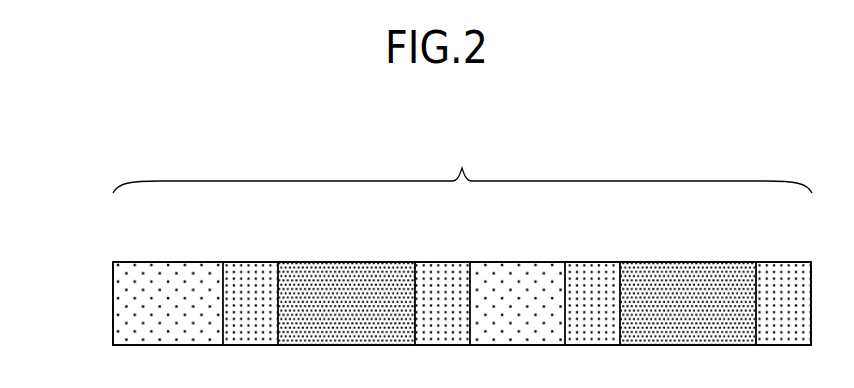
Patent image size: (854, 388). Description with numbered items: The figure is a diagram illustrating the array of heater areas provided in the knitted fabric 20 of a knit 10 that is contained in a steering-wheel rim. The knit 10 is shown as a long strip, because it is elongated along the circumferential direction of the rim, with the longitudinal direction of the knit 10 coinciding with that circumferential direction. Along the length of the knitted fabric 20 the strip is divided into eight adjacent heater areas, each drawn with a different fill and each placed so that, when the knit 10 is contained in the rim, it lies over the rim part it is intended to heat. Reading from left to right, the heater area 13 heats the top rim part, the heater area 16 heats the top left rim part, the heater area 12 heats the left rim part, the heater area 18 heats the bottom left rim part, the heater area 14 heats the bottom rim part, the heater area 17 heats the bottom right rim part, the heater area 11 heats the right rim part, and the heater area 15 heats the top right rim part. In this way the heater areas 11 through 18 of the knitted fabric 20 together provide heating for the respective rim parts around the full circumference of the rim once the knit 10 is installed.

The knit 10 is at (88, 276).
The knitted fabric 20 is at (462, 164).
The heater area 11 is at (685, 276).
The heater area 12 is at (344, 276).
The heater area 13 is at (167, 276).
The heater area 14 is at (514, 276).
The heater area 15 is at (781, 276).
The heater area 16 is at (247, 276).
The heater area 17 is at (589, 276).
The heater area 18 is at (439, 276).